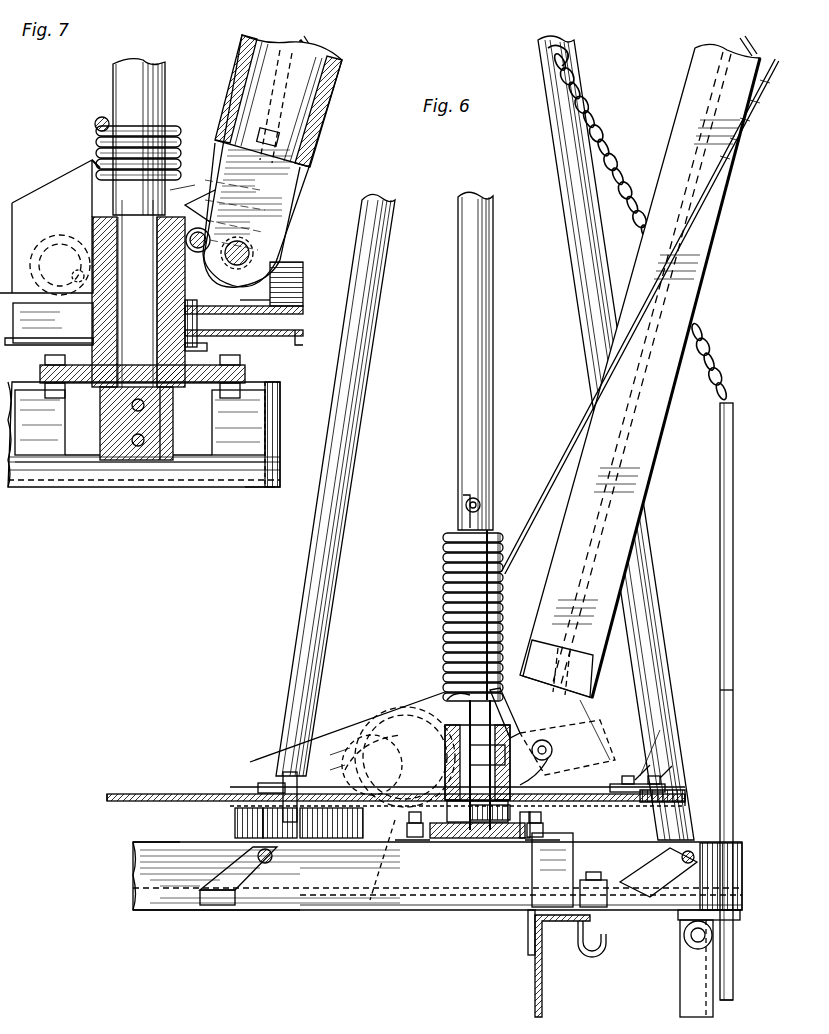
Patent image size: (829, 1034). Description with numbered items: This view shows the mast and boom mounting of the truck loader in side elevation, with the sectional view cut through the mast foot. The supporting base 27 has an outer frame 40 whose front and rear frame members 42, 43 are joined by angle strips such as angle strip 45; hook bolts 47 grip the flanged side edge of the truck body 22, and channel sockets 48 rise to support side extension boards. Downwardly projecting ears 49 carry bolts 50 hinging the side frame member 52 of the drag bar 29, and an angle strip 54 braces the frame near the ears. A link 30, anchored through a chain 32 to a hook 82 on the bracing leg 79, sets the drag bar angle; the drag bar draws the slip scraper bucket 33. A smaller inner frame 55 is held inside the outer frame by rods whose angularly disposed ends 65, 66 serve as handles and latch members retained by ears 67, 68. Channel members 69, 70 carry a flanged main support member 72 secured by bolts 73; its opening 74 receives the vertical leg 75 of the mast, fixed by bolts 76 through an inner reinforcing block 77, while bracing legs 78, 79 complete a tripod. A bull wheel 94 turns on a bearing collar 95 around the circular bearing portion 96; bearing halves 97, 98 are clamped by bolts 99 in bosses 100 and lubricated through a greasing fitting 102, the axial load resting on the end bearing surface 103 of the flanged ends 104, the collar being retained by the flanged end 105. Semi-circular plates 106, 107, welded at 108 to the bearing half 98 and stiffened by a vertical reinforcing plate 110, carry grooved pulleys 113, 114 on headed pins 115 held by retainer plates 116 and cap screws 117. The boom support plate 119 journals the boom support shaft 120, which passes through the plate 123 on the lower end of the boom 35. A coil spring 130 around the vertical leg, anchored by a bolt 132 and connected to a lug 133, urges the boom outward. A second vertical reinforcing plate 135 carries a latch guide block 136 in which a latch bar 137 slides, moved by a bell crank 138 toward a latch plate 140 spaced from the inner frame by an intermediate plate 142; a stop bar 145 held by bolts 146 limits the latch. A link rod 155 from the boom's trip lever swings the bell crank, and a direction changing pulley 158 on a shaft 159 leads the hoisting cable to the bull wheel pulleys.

In FIG. 6, the bracket 22 is at (542, 996).
In FIG. 7, the supporting base 27 is at (245, 487).
In FIG. 6, the supporting base 27 is at (160, 842).
In FIG. 6, the drag bar 29 is at (720, 1005).
In FIG. 6, the link 30 is at (734, 690).
In FIG. 6, the chain 32 is at (705, 360).
In FIG. 6, the slip scraper bucket 33 is at (578, 412).
In FIG. 6, the boom 35 is at (690, 280).
In FIG. 7, the outer frame 40 is at (275, 446).
In FIG. 6, the outer frame 40 is at (328, 910).
In FIG. 7, the front frame member 42 is at (276, 402).
In FIG. 6, the rear frame member 43 is at (160, 910).
In FIG. 6, the angle strip 45 is at (528, 922).
In FIG. 6, the hook bolt 47 is at (590, 958).
In FIG. 6, the channel socket 48 is at (574, 860).
In FIG. 6, the ear 49 is at (685, 915).
In FIG. 6, the bolt 50 is at (714, 935).
In FIG. 6, the side frame member 52 is at (680, 980).
In FIG. 6, the angle strip 54 is at (722, 882).
In FIG. 7, the inner frame 55 is at (28, 462).
In FIG. 6, the inner frame 55 is at (385, 897).
In FIG. 6, the angularly disposed end 65 is at (222, 878).
In FIG. 6, the angularly disposed end 66 is at (650, 882).
In FIG. 6, the ear 67 is at (222, 906).
In FIG. 6, the ear 68 is at (622, 907).
In FIG. 7, the channel member 69 is at (65, 458).
In FIG. 6, the channel member 69 is at (430, 845).
In FIG. 7, the channel member 70 is at (220, 462).
In FIG. 6, the channel member 70 is at (530, 866).
In FIG. 7, the flanged main support member 72 is at (240, 366).
In FIG. 6, the flanged main support member 72 is at (470, 840).
In FIG. 7, the bolt 73 is at (46, 366).
In FIG. 6, the bolt 73 is at (420, 838).
In FIG. 7, the opening 74 is at (165, 462).
In FIG. 7, the vertical leg 75 is at (118, 94).
In FIG. 6, the vertical leg 75 is at (494, 424).
In FIG. 7, the bolt 76 is at (138, 412).
In FIG. 7, the inner reinforcing block 77 is at (138, 448).
In FIG. 6, the bracing leg 78 is at (336, 535).
In FIG. 6, the bracing leg 79 is at (645, 590).
In FIG. 6, the hook 82 is at (600, 100).
In FIG. 7, the bull wheel 94 is at (295, 333).
In FIG. 6, the bull wheel 94 is at (606, 805).
In FIG. 7, the bearing collar 95 is at (186, 285).
In FIG. 6, the bearing collar 95 is at (512, 812).
In FIG. 7, the circular bearing portion 96 is at (95, 240).
In FIG. 7, the bearing half 97 is at (90, 262).
In FIG. 6, the bearing half 97 is at (430, 738).
In FIG. 7, the bearing half 98 is at (200, 228).
In FIG. 6, the bearing half 98 is at (518, 708).
In FIG. 6, the bolt 99 is at (400, 755).
In FIG. 6, the boss 100 is at (497, 760).
In FIG. 6, the greasing fitting 102 is at (385, 720).
In FIG. 7, the end bearing surface 103 is at (90, 388).
In FIG. 6, the end bearing surface 103 is at (477, 773).
In FIG. 7, the flanged end 104 is at (92, 348).
In FIG. 7, the flanged end 105 is at (100, 215).
In FIG. 7, the semi-circular plate 106 is at (295, 305).
In FIG. 6, the semi-circular plate 106 is at (655, 790).
In FIG. 7, the semi-circular plate 107 is at (295, 340).
In FIG. 6, the semi-circular plate 107 is at (690, 805).
In FIG. 7, the welding 108 is at (197, 318).
In FIG. 6, the vertical reinforcing plate 110 is at (522, 840).
In FIG. 6, the grooved pulley 113 is at (690, 793).
In FIG. 6, the grooved pulley 114 is at (560, 786).
In FIG. 6, the headed pin 115 is at (582, 760).
In FIG. 6, the retainer plate 116 is at (640, 770).
In FIG. 6, the cap screw 117 is at (660, 750).
In FIG. 6, the boom support plate 119 is at (555, 770).
In FIG. 7, the boom support shaft 120 is at (252, 256).
In FIG. 6, the boom support shaft 120 is at (560, 740).
In FIG. 6, the plate 123 is at (555, 636).
In FIG. 7, the coil spring 130 is at (172, 130).
In FIG. 6, the coil spring 130 is at (500, 602).
In FIG. 6, the bolt 132 is at (486, 492).
In FIG. 7, the lug 133 is at (208, 250).
In FIG. 6, the lug 133 is at (575, 700).
In FIG. 6, the second vertical reinforcing plate 135 is at (418, 700).
In FIG. 6, the latch guide block 136 is at (280, 783).
In FIG. 6, the latch bar 137 is at (270, 790).
In FIG. 7, the bell crank 138 is at (92, 160).
In FIG. 6, the bell crank 138 is at (445, 700).
In FIG. 6, the latch plate 140 is at (235, 794).
In FIG. 6, the intermediate plate 142 is at (235, 822).
In FIG. 6, the stop bar 145 is at (327, 752).
In FIG. 6, the bolt 146 is at (400, 690).
In FIG. 7, the link rod 155 is at (312, 46).
In FIG. 6, the link rod 155 is at (748, 52).
In FIG. 6, the direction changing pulley 158 is at (350, 823).
In FIG. 6, the shaft 159 is at (387, 860).